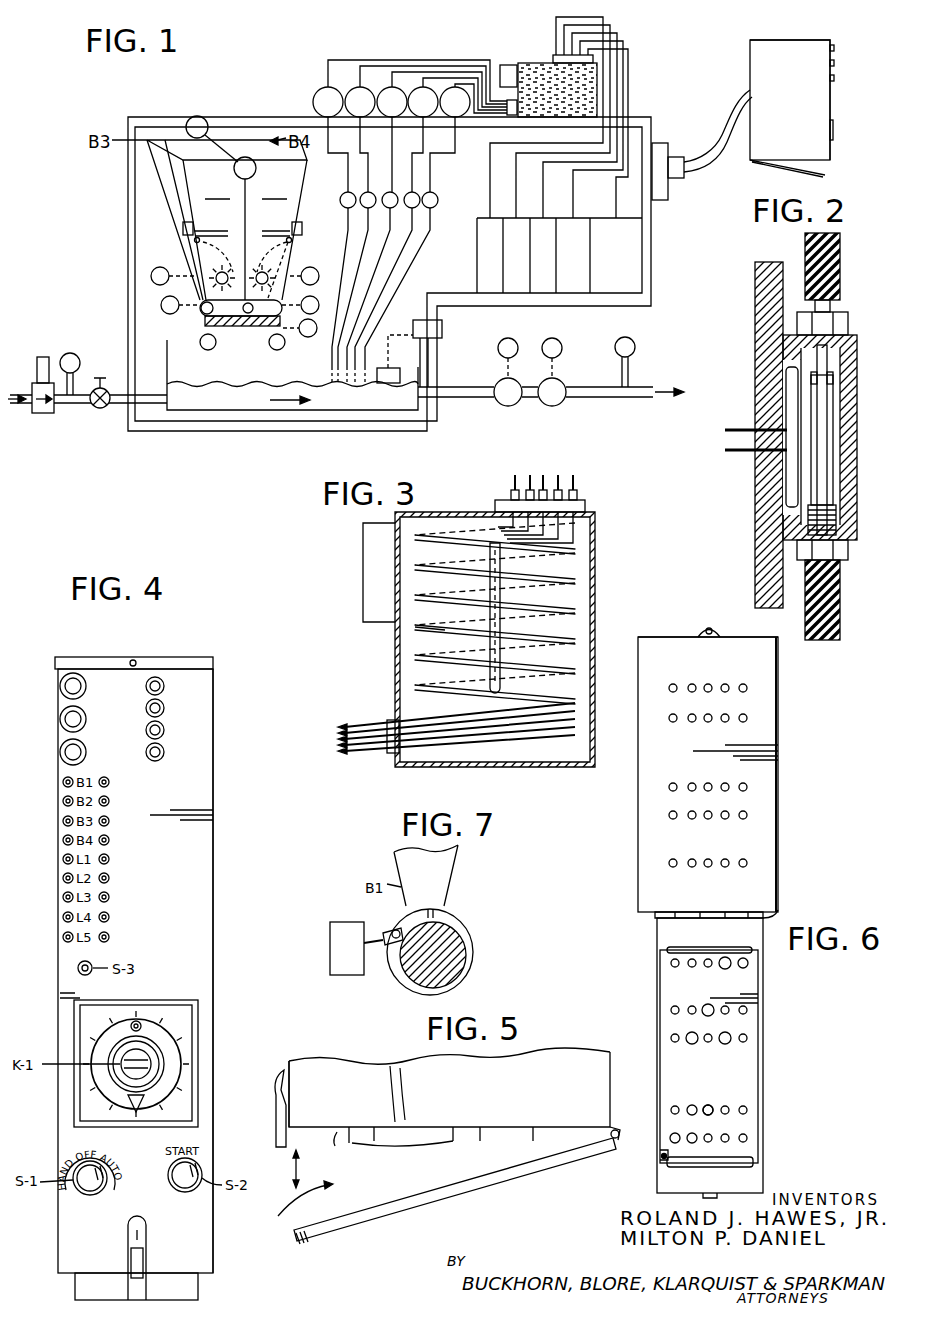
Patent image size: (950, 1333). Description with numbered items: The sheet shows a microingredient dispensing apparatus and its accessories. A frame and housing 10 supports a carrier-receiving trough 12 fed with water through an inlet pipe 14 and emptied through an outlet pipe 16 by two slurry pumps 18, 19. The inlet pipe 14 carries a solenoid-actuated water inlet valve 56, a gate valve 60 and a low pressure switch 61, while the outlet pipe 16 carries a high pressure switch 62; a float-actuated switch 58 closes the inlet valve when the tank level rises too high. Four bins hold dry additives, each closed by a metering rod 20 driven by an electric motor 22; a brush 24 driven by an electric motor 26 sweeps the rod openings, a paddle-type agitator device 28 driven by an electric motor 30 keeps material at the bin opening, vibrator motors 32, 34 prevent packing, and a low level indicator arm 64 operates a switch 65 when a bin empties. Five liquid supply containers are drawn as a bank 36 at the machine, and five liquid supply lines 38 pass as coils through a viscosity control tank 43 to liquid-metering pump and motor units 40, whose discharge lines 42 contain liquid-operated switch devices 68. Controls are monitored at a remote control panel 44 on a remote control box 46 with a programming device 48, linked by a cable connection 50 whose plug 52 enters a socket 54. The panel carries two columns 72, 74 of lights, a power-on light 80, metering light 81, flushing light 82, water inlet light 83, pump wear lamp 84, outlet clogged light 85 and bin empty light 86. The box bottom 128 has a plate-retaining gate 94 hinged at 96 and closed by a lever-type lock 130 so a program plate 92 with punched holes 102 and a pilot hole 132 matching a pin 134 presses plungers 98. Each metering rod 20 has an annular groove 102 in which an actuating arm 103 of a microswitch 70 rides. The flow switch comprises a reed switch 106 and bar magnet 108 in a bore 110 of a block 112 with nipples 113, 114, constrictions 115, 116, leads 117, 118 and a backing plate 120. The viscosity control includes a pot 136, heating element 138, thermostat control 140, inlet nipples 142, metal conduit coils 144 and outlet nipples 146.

In FIG. 1, the frame and housing 10 is at (128, 226).
In FIG. 1, the carrier-receiving trough 12 is at (226, 410).
In FIG. 1, the inlet pipe 14 is at (115, 408).
In FIG. 1, the outlet pipe 16 is at (470, 398).
In FIG. 1, the slurry pump 18 is at (553, 406).
In FIG. 1, the slurry pump 19 is at (510, 406).
In FIG. 1, the metering rod 20 is at (222, 318).
In FIG. 7, the metering rod 20 is at (462, 918).
In FIG. 1, the electric motor 22 is at (175, 338).
In FIG. 1, the brush 24 is at (258, 327).
In FIG. 1, the electric motor 26 is at (302, 337).
In FIG. 1, the paddle-type agitator device 28 is at (298, 238).
In FIG. 1, the electric motor 30 is at (282, 270).
In FIG. 1, the vibrator motor 32 is at (246, 157).
In FIG. 1, the vibrator motor 34 is at (197, 116).
In FIG. 1, the lamp panel 36 is at (584, 155).
In FIG. 1, the liquid supply line 38 is at (458, 60).
In FIG. 3, the liquid supply line 38 is at (547, 478).
In FIG. 1, the liquid-metering pump and motor unit 40 is at (310, 103).
In FIG. 1, the discharge line 42 is at (446, 153).
In FIG. 2, the discharge line 42 is at (840, 262).
In FIG. 1, the viscosity control tank 43 is at (520, 62).
In FIG. 3, the viscosity control tank 43 is at (438, 513).
In FIG. 1, the remote control panel 44 is at (830, 90).
In FIG. 4, the remote control panel 44 is at (197, 860).
In FIG. 5, the remote control panel 44 is at (289, 1061).
In FIG. 6, the remote control panel 44 is at (665, 637).
In FIG. 1, the remote control box 46 is at (783, 41).
In FIG. 4, the remote control box 46 is at (167, 658).
In FIG. 5, the remote control box 46 is at (346, 1056).
In FIG. 6, the remote control box 46 is at (778, 787).
In FIG. 1, the programming device 48 is at (822, 171).
In FIG. 5, the programming device 48 is at (288, 1196).
In FIG. 1, the cable connection 50 is at (718, 122).
In FIG. 1, the plug 52 is at (670, 160).
In FIG. 1, the socket 54 is at (658, 147).
In FIG. 1, the solenoid-actuated water inlet valve 56 is at (43, 415).
In FIG. 1, the float-actuated switch 58 is at (443, 327).
In FIG. 1, the gate valve 60 is at (100, 376).
In FIG. 1, the low pressure switch 61 is at (64, 355).
In FIG. 1, the high pressure switch 62 is at (633, 349).
In FIG. 1, the low level indicator arm 64 is at (227, 220).
In FIG. 1, the switch 65 is at (180, 235).
In FIG. 1, the liquid-operated switch device 68 is at (439, 201).
In FIG. 2, the liquid-operated switch device 68 is at (851, 331).
In FIG. 1, the microswitch 70 is at (292, 371).
In FIG. 7, the microswitch 70 is at (349, 936).
In FIG. 4, the left-hand column of lights 72 is at (62, 877).
In FIG. 4, the right-hand column of lights 74 is at (110, 857).
In FIG. 4, the power-on light 80 is at (72, 672).
In FIG. 4, the metering light 81 is at (60, 720).
In FIG. 4, the flushing light 82 is at (60, 752).
In FIG. 4, the water inlet light 83 is at (165, 685).
In FIG. 4, the pump wear lamp 84 is at (165, 708).
In FIG. 4, the outlet clogged light 85 is at (165, 730).
In FIG. 4, the bin empty light 86 is at (165, 752).
In FIG. 6, the program plate 92 is at (750, 1097).
In FIG. 4, the plate-retaining gate 94 is at (200, 1292).
In FIG. 5, the plate-retaining gate 94 is at (443, 1186).
In FIG. 6, the plate-retaining gate 94 is at (763, 1182).
In FIG. 5, the hinge 96 is at (617, 1131).
In FIG. 6, the hinge 96 is at (778, 916).
In FIG. 5, the plungers 98 is at (453, 1143).
In FIG. 6, the plungers 98 is at (728, 698).
In FIG. 7, the punched holes 102 is at (459, 952).
In FIG. 6, the punched holes 102 is at (716, 1121).
In FIG. 7, the actuating arm 103 is at (381, 921).
In FIG. 2, the reed switch 106 is at (795, 470).
In FIG. 2, the bar magnet 108 is at (840, 480).
In FIG. 2, the bore 110 is at (827, 412).
In FIG. 2, the block 112 is at (856, 452).
In FIG. 2, the hose connection nipple 113 is at (830, 306).
In FIG. 2, the hose connection nipple 114 is at (838, 585).
In FIG. 2, the constriction 115 is at (840, 522).
In FIG. 2, the constriction 116 is at (833, 383).
In FIG. 2, the electrical lead 117 is at (735, 452).
In FIG. 2, the electrical lead 118 is at (745, 430).
In FIG. 2, the backing plate 120 is at (756, 532).
In FIG. 5, the bottom 128 is at (335, 1151).
In FIG. 6, the bottom 128 is at (763, 852).
In FIG. 4, the lever-type lock 130 is at (142, 1255).
In FIG. 5, the lever-type lock 130 is at (278, 1111).
In FIG. 6, the lever-type lock 130 is at (718, 617).
In FIG. 6, the pilot hole 132 is at (686, 1152).
In FIG. 6, the pin 134 is at (662, 1157).
In FIG. 3, the pot 136 is at (594, 590).
In FIG. 3, the heating element 138 is at (488, 613).
In FIG. 3, the thermostat control 140 is at (363, 578).
In FIG. 3, the inlet nipple 142 is at (578, 497).
In FIG. 3, the metal conduit coil 144 is at (413, 628).
In FIG. 3, the outlet nipple 146 is at (390, 720).